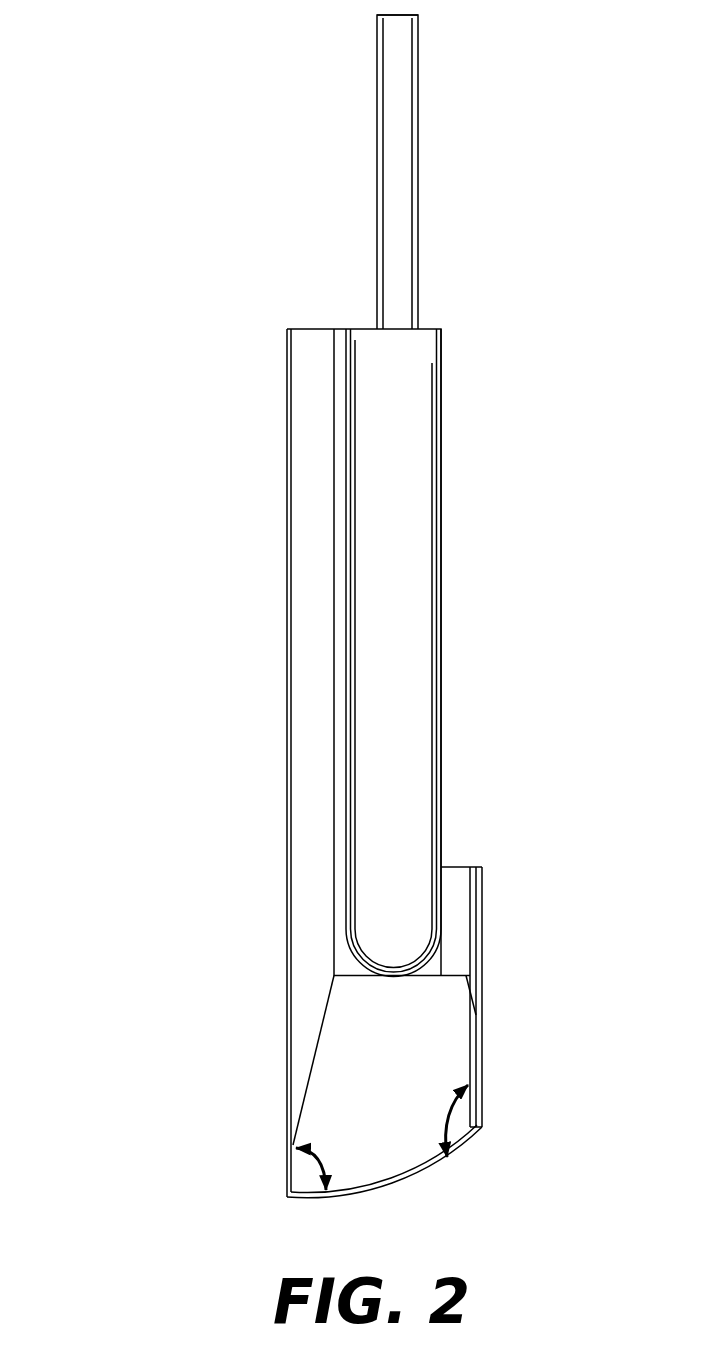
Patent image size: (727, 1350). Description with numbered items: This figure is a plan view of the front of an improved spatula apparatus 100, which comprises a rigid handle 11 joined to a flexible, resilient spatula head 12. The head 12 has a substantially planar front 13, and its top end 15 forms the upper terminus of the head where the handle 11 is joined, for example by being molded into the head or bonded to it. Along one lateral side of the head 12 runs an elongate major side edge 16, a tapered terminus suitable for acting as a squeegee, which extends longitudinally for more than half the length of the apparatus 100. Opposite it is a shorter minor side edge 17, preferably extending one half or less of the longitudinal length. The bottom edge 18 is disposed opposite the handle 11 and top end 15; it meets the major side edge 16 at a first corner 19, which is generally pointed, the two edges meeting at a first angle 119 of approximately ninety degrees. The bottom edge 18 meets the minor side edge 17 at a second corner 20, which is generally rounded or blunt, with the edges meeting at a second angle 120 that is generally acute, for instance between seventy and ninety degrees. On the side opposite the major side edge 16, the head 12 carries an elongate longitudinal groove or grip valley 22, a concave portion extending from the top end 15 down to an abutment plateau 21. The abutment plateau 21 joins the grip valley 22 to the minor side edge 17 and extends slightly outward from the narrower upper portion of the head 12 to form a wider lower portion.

The spatula apparatus 100 is at (123, 123).
The handle 11 is at (405, 128).
The spatula head 12 is at (563, 593).
The front 13 is at (403, 753).
The top end 15 is at (347, 328).
The elongate major side edge 16 is at (288, 727).
The minor side edge 17 is at (483, 995).
The bottom edge 18 is at (448, 1162).
The first corner 19 is at (285, 1197).
The second corner 20 is at (480, 1127).
The abutment plateau 21 is at (460, 867).
The grip valley 22 is at (442, 622).
The first angle 119 is at (316, 1160).
The second angle 120 is at (445, 1120).